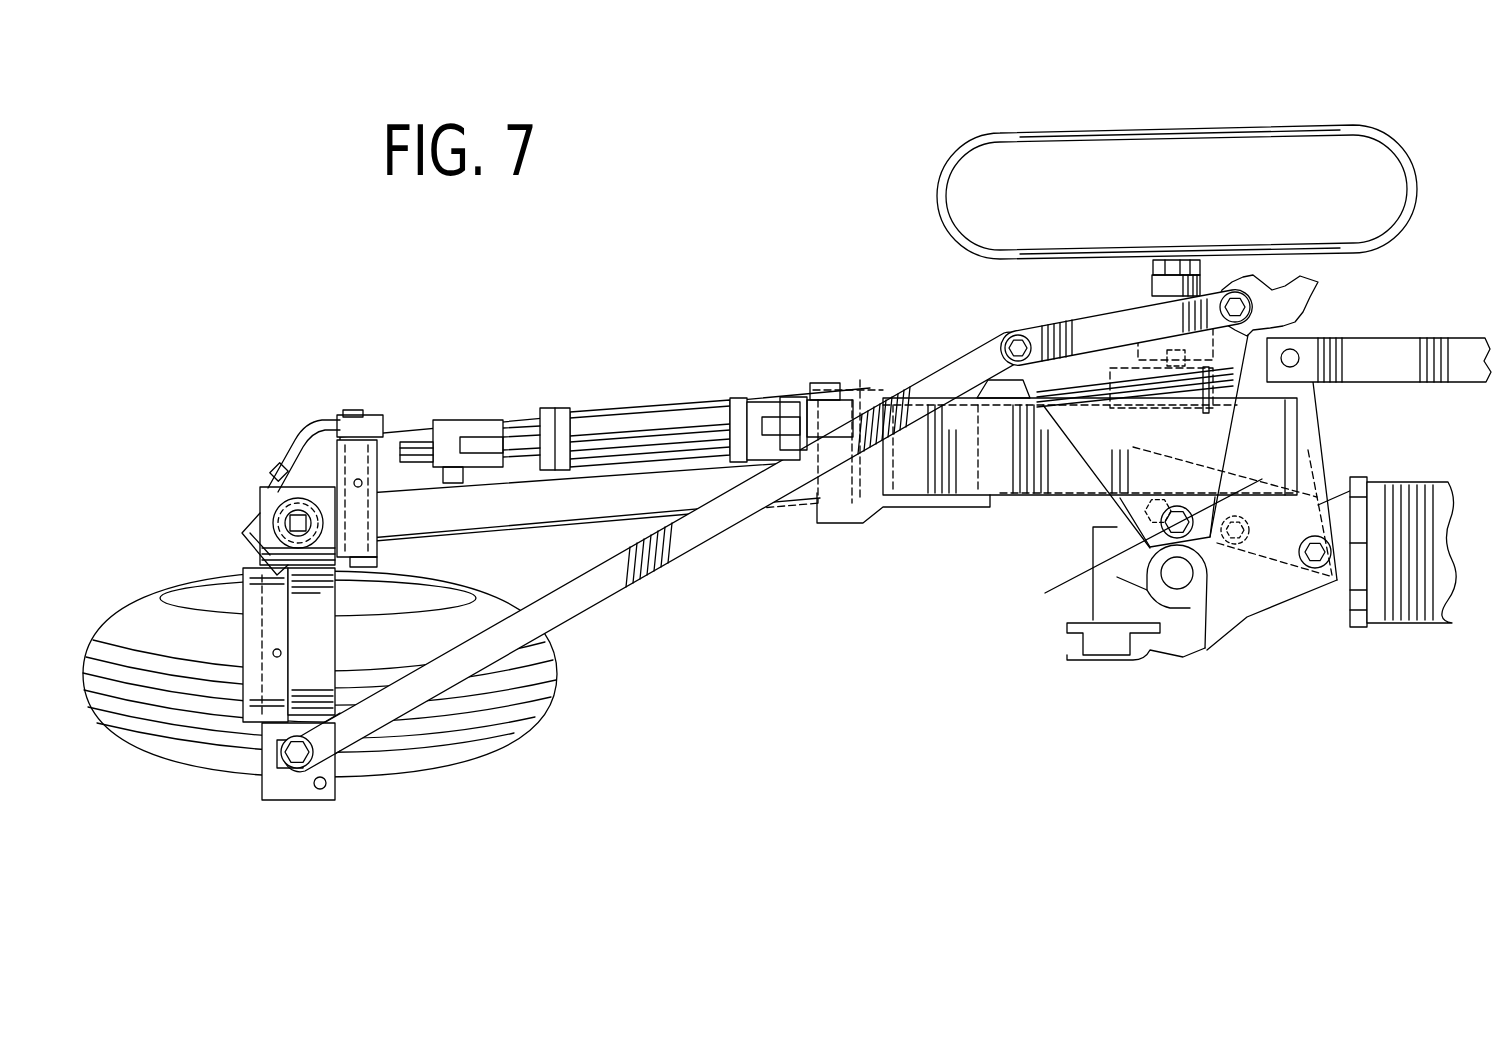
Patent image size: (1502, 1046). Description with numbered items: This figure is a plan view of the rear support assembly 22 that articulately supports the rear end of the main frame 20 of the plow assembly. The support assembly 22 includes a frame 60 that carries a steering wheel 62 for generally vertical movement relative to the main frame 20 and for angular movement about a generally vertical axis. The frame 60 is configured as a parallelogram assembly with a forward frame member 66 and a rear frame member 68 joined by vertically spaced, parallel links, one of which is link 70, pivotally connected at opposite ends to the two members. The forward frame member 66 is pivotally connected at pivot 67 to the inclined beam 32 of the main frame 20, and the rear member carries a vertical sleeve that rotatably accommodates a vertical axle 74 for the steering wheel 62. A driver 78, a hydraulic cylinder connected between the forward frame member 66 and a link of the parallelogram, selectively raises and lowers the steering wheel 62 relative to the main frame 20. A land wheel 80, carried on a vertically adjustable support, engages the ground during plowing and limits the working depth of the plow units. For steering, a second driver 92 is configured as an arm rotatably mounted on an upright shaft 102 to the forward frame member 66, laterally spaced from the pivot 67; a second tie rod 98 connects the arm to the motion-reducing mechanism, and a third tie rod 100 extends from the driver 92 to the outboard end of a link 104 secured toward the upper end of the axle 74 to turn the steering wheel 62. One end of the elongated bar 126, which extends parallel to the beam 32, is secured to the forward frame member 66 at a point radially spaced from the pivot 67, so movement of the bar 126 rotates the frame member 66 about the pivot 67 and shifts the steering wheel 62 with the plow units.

The main frame 20 is at (1388, 476).
The support assembly 22 is at (637, 368).
The beam 32 is at (1437, 613).
The frame 60 is at (1023, 496).
The steering wheel 62 is at (475, 742).
The forward frame member 66 is at (1085, 480).
The pivot 67 is at (1177, 580).
The rear frame member 68 is at (392, 549).
The link 70 is at (603, 520).
The vertical axle 74 is at (260, 520).
The driver 78 is at (662, 402).
The land wheel 80 is at (1155, 152).
The second driver 92 is at (1207, 437).
The second tie rod 98 is at (1293, 298).
The third tie rod 100 is at (615, 577).
The upright shaft 102 is at (1163, 530).
The link 104 is at (298, 788).
The elongated bar 126 is at (1385, 352).